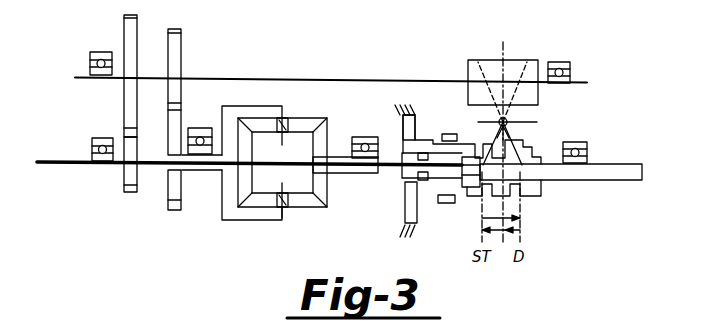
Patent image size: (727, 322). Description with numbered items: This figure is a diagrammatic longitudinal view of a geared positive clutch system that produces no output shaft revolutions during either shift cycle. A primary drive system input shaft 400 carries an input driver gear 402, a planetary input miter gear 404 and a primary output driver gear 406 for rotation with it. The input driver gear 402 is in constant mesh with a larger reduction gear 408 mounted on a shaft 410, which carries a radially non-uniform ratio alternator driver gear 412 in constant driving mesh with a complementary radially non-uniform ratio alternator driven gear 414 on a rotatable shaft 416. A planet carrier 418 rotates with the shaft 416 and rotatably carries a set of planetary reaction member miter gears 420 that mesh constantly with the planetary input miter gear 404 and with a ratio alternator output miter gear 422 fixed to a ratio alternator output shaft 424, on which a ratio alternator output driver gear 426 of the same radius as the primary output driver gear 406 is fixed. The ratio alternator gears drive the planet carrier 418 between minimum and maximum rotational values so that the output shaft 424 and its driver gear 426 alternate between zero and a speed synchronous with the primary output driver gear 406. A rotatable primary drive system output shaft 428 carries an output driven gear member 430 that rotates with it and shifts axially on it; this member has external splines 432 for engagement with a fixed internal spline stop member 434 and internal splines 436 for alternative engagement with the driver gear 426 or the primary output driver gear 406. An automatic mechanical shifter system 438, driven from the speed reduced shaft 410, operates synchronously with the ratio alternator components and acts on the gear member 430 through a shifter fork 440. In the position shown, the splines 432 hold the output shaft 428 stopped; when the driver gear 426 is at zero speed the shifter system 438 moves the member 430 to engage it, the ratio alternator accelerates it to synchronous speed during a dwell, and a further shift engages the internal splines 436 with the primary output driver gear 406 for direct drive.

The primary drive system input shaft 400 is at (60, 153).
The input driver gear 402 is at (120, 182).
The planetary input miter gear 404 is at (235, 190).
The primary output driver gear 406 is at (438, 172).
The reduction gear 408 is at (123, 33).
The shaft 410 is at (83, 78).
The ratio alternator driver gear 412 is at (182, 42).
The ratio alternator driven gear 414 is at (167, 195).
The shaft 416 is at (197, 177).
The planet carrier 418 is at (233, 105).
The planetary reaction member miter gears 420 is at (302, 119).
The ratio alternator output miter gear 422 is at (336, 135).
The ratio alternator output shaft 424 is at (347, 172).
The ratio alternator output driver gear 426 is at (407, 188).
The primary drive system output shaft 428 is at (610, 163).
The output driven gear member 430 is at (462, 140).
The external splines 432 is at (408, 202).
The fixed internal spline stop member 434 is at (393, 125).
The internal splines 436 is at (435, 140).
The automatic mechanical shifter system 438 is at (533, 60).
The shifter fork 440 is at (510, 131).